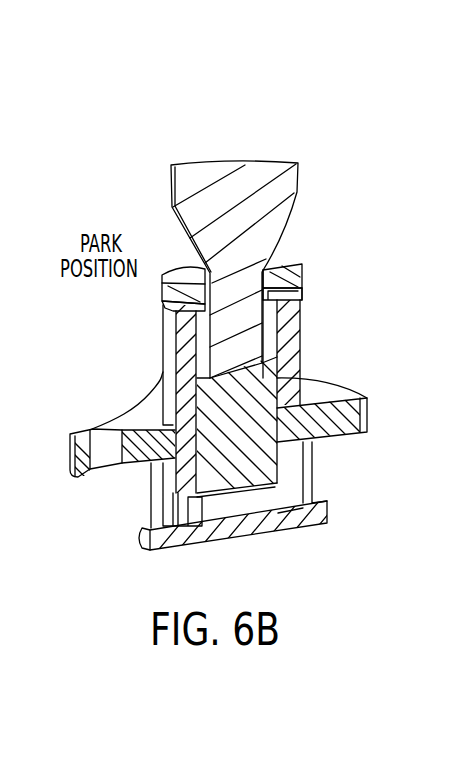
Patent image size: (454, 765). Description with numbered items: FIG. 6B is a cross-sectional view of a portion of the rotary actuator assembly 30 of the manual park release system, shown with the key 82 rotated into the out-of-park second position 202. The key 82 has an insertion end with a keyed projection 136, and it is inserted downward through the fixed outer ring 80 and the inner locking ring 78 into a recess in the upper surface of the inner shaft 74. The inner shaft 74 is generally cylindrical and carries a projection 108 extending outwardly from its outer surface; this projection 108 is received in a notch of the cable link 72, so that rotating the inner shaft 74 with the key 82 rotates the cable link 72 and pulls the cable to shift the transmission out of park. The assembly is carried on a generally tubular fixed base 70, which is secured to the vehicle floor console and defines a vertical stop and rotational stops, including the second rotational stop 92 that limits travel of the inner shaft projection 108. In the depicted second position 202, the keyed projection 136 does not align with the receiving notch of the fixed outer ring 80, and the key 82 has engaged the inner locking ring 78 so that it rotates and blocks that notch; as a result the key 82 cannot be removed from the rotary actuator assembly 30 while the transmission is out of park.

The rotary actuator assembly 30 is at (333, 123).
The out-of-park second position 202 is at (333, 123).
The key 82 is at (222, 180).
The outer ring 80 is at (302, 273).
The inner locking ring 78 is at (298, 298).
The keyed projection 136 is at (205, 328).
The inner shaft 74 is at (252, 400).
The cable link 72 is at (368, 413).
The projection 108 is at (188, 470).
The fixed base 70 is at (160, 496).
The second rotational stop 92 is at (182, 527).